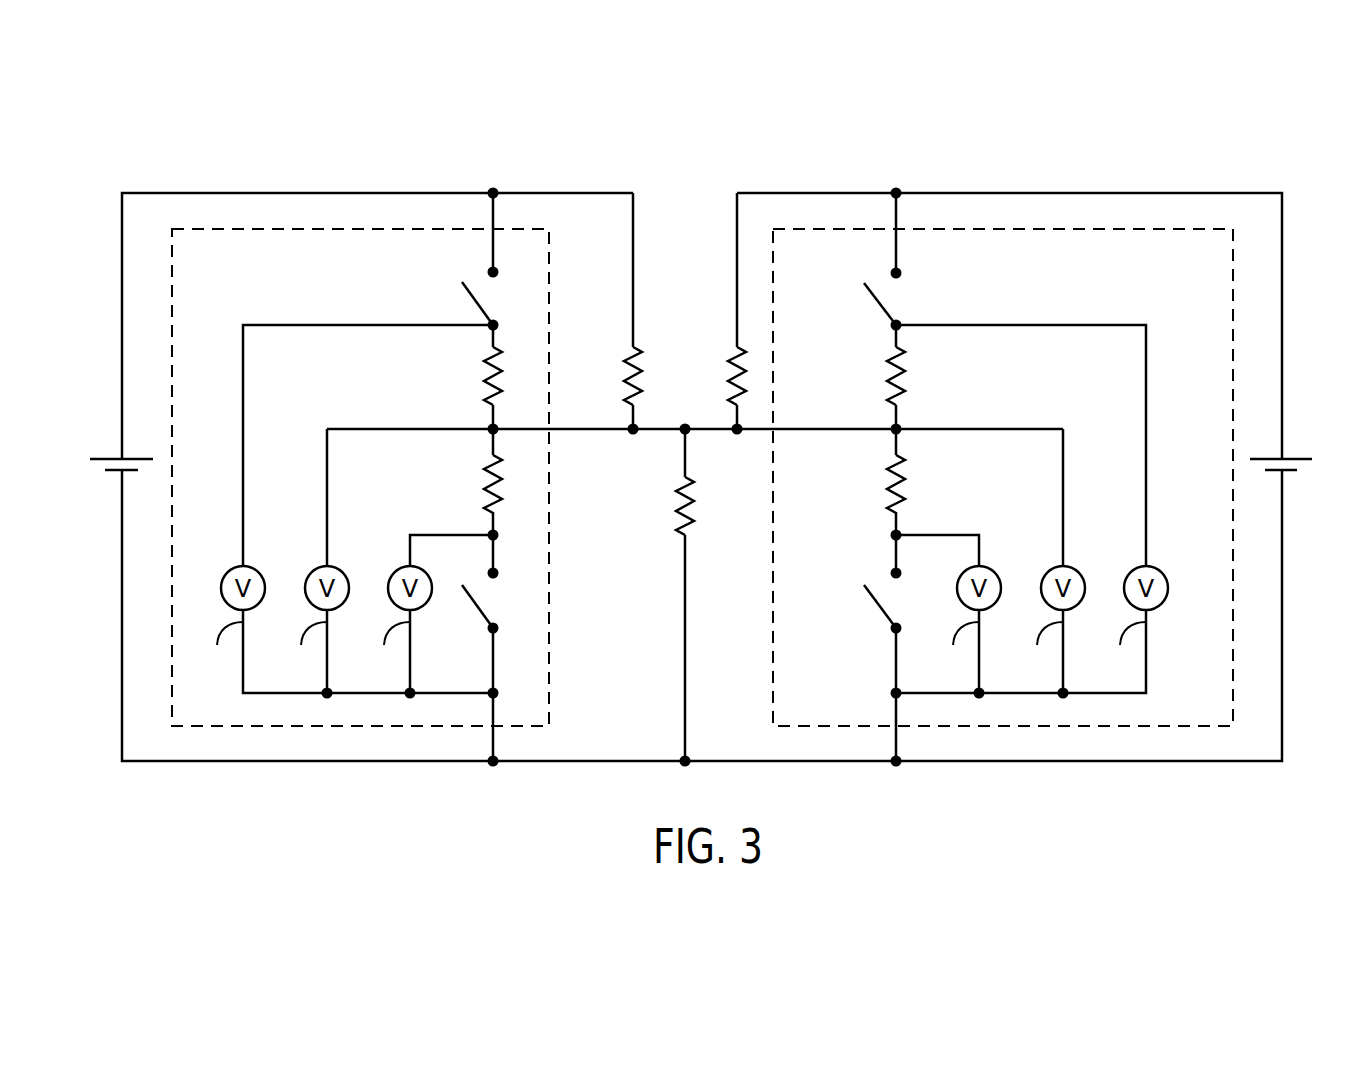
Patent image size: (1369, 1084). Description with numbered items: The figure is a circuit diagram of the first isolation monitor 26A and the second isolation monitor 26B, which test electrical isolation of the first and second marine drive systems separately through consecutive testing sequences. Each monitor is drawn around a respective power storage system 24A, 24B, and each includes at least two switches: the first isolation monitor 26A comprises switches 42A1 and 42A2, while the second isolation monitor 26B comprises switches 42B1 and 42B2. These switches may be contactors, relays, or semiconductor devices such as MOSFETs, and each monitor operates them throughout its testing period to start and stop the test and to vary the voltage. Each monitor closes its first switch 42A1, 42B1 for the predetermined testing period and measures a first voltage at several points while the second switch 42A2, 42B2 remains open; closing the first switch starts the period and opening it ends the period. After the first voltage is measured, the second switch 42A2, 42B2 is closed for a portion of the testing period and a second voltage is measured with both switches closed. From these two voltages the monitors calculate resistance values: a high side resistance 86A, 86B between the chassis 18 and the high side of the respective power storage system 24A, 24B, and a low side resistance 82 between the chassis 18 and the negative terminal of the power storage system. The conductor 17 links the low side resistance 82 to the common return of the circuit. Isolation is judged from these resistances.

The first isolation monitor 26A is at (250, 182).
The second isolation monitor 26B is at (930, 170).
The first switch of the first isolation monitor 42A1 is at (474, 303).
The second switch of the first isolation monitor 42A2 is at (478, 606).
The first switch of the second isolation monitor 42B1 is at (882, 308).
The second switch of the second isolation monitor 42B2 is at (880, 606).
The high side resistance 86A is at (600, 353).
The high side resistance 86B is at (702, 353).
The low side resistance 82 is at (654, 512).
The chassis 18 is at (716, 438).
The return conductor 17 is at (686, 652).
The power storage system 24A is at (111, 456).
The power storage system 24B is at (1291, 456).